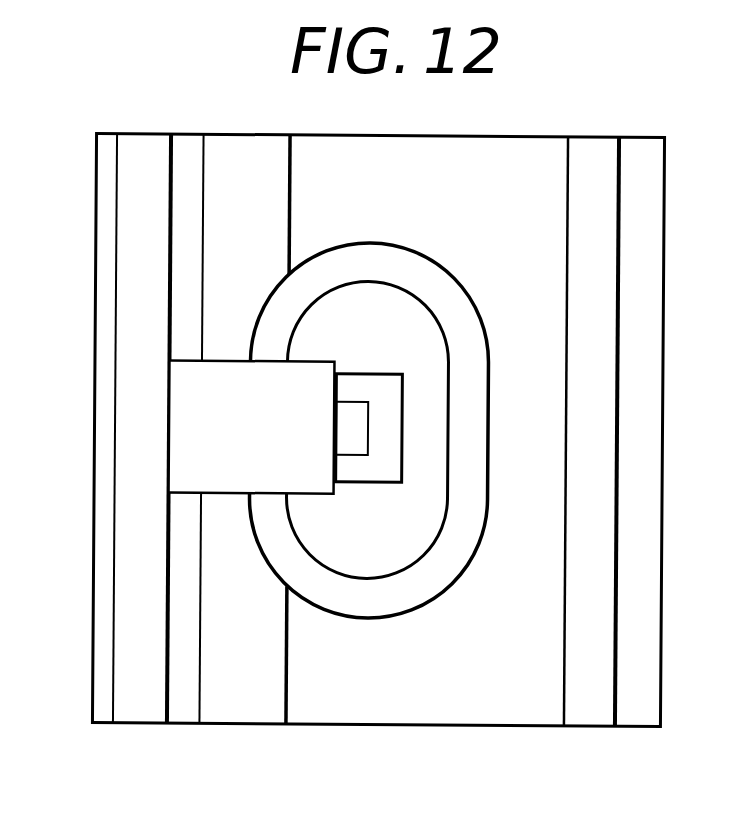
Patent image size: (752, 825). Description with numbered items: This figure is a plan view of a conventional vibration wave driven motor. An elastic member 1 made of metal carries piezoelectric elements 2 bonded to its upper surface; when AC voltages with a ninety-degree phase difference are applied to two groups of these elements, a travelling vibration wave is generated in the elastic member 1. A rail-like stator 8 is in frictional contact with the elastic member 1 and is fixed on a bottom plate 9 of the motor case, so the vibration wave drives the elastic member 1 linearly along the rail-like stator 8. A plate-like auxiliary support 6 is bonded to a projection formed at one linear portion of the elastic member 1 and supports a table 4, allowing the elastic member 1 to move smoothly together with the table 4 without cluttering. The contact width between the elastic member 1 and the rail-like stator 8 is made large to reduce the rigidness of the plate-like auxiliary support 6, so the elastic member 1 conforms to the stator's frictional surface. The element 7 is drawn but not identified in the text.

The elastic member 1 is at (470, 294).
The piezoelectric elements 2 is at (470, 338).
The table 4 is at (183, 415).
The plate-like auxiliary support 6 is at (373, 382).
The side plate 7 is at (602, 333).
The rail-like stator 8 is at (258, 710).
The bottom plate 9 is at (642, 664).